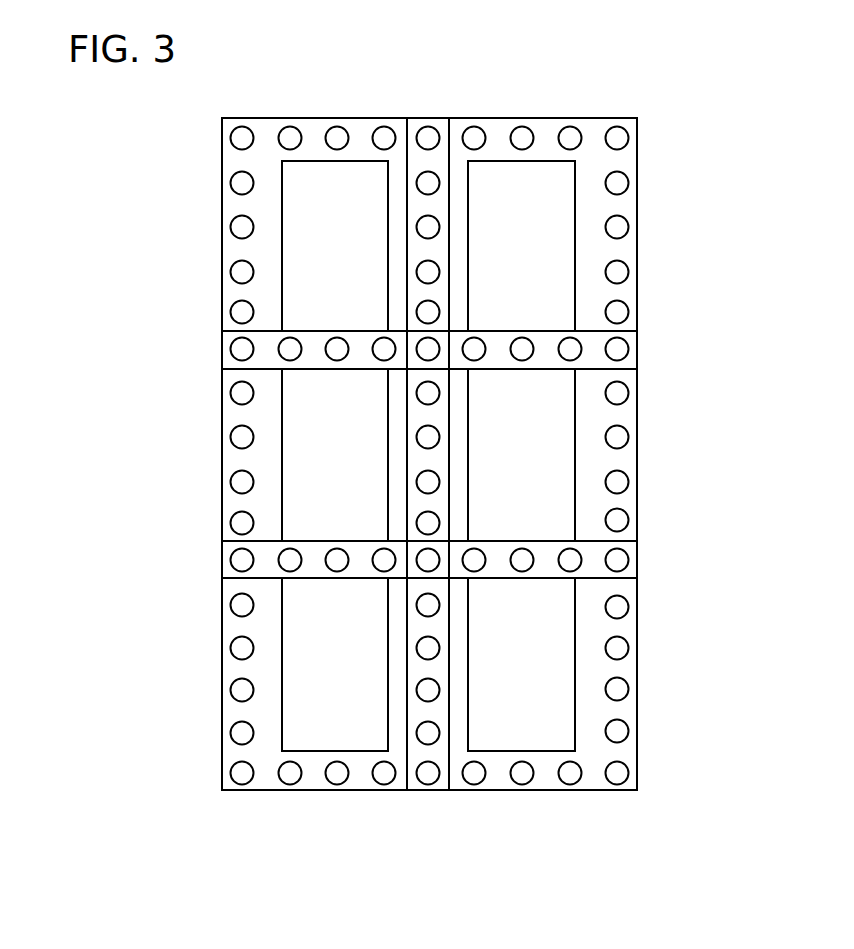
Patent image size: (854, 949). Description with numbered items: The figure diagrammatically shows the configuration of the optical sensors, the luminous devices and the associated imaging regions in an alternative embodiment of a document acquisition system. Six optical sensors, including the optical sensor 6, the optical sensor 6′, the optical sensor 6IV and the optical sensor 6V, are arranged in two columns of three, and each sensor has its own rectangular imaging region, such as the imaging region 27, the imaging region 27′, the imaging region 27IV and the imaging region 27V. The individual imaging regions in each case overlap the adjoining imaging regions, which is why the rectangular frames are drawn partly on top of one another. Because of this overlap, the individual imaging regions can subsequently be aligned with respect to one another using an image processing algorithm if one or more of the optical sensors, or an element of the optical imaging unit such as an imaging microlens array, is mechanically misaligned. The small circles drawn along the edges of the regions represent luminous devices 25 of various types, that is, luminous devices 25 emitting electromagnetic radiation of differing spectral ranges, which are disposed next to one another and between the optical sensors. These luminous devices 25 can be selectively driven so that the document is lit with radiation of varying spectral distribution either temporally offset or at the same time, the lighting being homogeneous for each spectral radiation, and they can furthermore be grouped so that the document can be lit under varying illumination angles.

The luminous device 25 is at (379, 135).
The optical sensor 6 is at (283, 747).
The optical sensor 6′ is at (496, 745).
The optical sensor 6IV is at (295, 240).
The optical sensor 6V is at (560, 252).
The imaging region 27 is at (236, 754).
The imaging region 27′ is at (624, 746).
The imaging region 27IV is at (240, 163).
The imaging region 27V is at (600, 163).